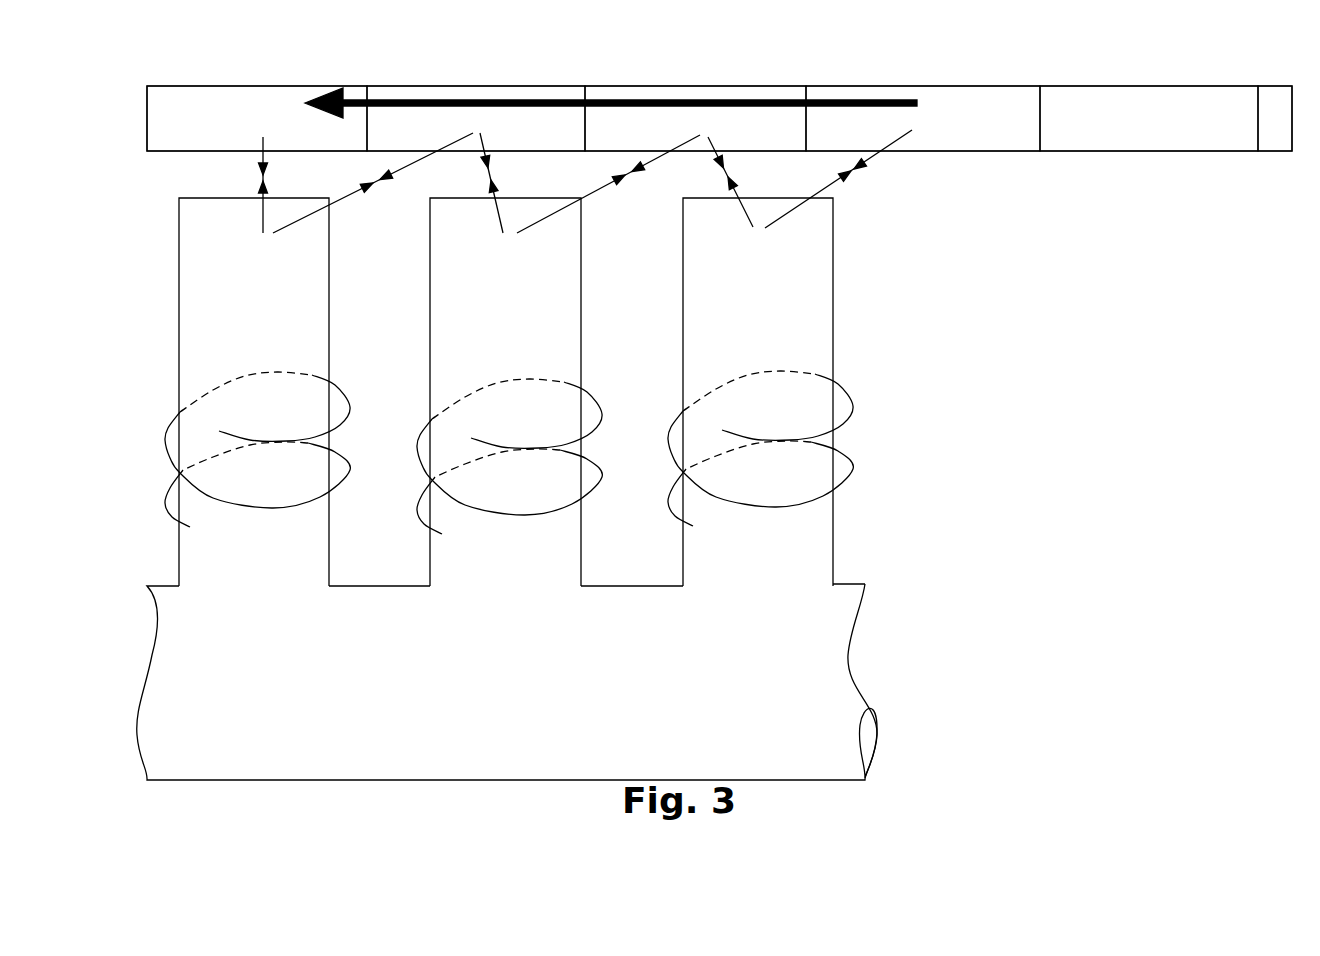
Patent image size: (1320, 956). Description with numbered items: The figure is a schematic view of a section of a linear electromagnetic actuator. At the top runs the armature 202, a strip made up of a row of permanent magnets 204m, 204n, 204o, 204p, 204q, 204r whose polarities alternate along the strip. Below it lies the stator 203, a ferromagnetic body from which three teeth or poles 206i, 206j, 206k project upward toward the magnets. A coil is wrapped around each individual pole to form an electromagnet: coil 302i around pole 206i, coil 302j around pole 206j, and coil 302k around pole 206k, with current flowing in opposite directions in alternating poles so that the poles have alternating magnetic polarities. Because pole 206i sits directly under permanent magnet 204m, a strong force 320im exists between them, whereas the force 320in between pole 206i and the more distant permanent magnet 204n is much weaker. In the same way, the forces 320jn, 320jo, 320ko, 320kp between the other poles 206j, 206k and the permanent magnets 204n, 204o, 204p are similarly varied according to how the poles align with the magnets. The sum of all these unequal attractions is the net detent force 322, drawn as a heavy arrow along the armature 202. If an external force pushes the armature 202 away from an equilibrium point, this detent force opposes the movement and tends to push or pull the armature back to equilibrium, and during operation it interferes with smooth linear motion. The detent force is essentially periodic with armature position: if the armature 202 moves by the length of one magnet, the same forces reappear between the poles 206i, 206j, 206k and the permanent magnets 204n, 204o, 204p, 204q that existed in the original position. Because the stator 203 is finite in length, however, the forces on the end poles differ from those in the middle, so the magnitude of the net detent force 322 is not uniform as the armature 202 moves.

The armature 202 is at (378, 62).
The stator 203 is at (872, 514).
The permanent magnet 204m is at (223, 86).
The permanent magnet 204n is at (502, 87).
The permanent magnet 204o is at (720, 84).
The permanent magnet 204p is at (903, 85).
The permanent magnet 204q is at (1138, 87).
The permanent magnet 204r is at (1282, 88).
The pole 206i is at (178, 297).
The pole 206j is at (428, 297).
The pole 206k is at (682, 363).
The coil 302i is at (212, 497).
The coil 302j is at (462, 503).
The coil 302k is at (713, 493).
The force 320im is at (225, 185).
The force 320in is at (373, 183).
The force 320jn is at (465, 183).
The force 320jo is at (608, 184).
The force 320ko is at (753, 182).
The force 320kp is at (841, 179).
The net detent force 322 is at (731, 106).